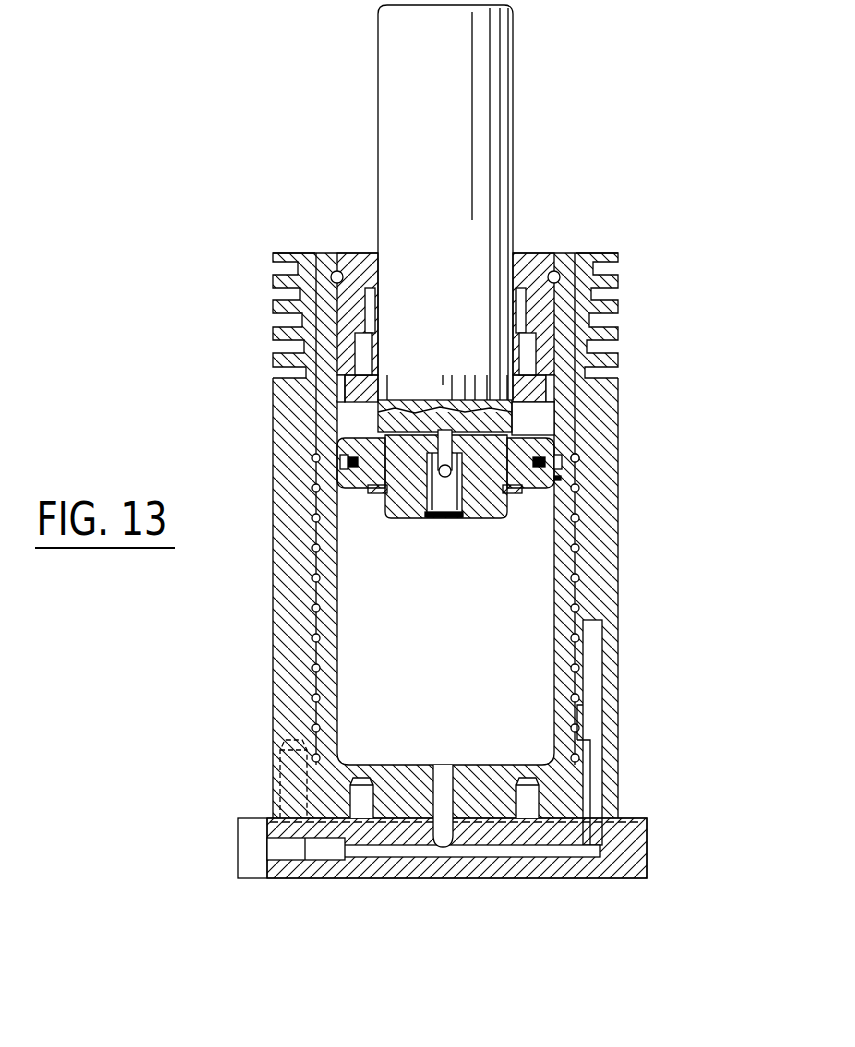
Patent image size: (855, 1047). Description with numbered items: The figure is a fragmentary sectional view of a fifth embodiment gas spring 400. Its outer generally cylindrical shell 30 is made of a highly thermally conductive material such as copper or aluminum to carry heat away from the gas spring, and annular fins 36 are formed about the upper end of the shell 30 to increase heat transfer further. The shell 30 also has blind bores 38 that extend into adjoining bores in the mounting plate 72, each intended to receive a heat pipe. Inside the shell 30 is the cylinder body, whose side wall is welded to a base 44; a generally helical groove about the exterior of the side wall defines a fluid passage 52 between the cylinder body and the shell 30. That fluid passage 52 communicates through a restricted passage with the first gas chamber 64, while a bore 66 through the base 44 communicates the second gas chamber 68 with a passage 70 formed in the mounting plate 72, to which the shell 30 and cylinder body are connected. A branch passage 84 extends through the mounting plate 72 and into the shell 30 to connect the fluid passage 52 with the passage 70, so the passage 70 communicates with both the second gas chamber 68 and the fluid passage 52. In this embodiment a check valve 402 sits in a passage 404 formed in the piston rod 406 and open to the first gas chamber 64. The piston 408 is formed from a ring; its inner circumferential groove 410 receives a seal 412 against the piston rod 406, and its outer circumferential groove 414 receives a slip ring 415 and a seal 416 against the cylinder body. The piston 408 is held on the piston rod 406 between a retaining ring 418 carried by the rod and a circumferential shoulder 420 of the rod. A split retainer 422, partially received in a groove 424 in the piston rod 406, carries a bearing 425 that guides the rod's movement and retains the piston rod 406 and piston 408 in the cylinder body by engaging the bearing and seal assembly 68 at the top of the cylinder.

The outer shell 30 is at (603, 557).
The annular fins 36 is at (613, 277).
The blind bores 38 is at (597, 647).
The base 44 is at (482, 775).
The fluid passage 52 is at (573, 618).
The first gas chamber 64 is at (537, 420).
The bore 66 is at (443, 765).
The second gas chamber 68 is at (537, 253).
The passage 70 is at (500, 860).
The mounting plate 72 is at (597, 872).
The branch passage 84 is at (577, 720).
The gas spring 400 is at (595, 205).
The check valve 402 is at (447, 522).
The passage 404 is at (446, 452).
The piston rod 406 is at (510, 30).
The piston 408 is at (560, 478).
The inner circumferential groove 410 is at (372, 480).
The seal 412 is at (503, 462).
The outer circumferential groove 414 is at (341, 466).
The slip ring 415 is at (566, 461).
The seal 416 is at (547, 460).
The retaining ring 418 is at (378, 493).
The circumferential shoulder 420 is at (346, 461).
The split retainer 422 is at (345, 403).
The groove 424 is at (337, 385).
The bearing 425 is at (546, 397).